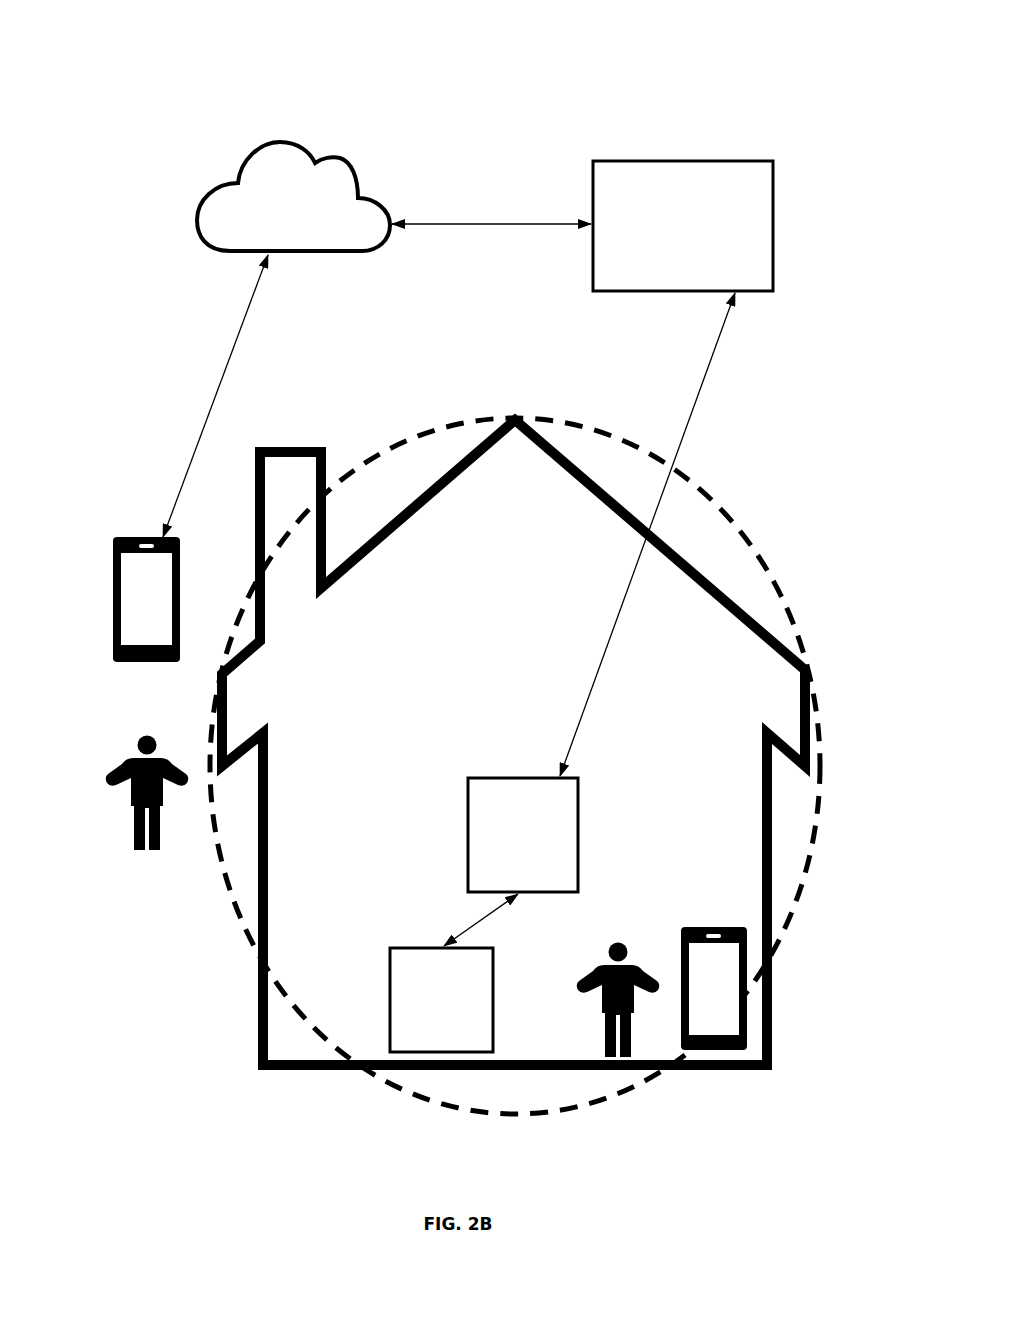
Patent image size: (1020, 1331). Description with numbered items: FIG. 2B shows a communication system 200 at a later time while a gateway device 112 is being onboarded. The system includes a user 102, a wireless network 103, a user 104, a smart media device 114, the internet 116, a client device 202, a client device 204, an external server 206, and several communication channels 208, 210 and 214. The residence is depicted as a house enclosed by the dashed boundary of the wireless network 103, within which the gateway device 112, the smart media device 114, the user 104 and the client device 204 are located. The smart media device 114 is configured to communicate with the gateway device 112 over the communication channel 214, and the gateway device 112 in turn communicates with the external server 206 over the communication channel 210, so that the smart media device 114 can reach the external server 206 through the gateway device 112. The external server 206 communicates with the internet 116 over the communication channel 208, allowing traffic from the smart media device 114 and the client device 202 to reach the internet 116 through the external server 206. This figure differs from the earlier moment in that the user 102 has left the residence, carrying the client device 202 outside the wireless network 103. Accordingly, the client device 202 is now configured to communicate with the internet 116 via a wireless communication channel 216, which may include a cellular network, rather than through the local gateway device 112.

The communication system 200 is at (190, 91).
The internet 116 is at (340, 160).
The external server 206 is at (656, 160).
The communication channel 208 is at (468, 224).
The wireless communication channel 216 is at (245, 329).
The communication channel 210 is at (690, 412).
The client device 202 is at (128, 535).
The gateway device 112 is at (505, 777).
The communication channel 214 is at (488, 913).
The user 102 is at (140, 853).
The wireless network 103 is at (243, 932).
The smart media device 114 is at (452, 1052).
The user 104 is at (620, 1072).
The client device 204 is at (710, 1070).